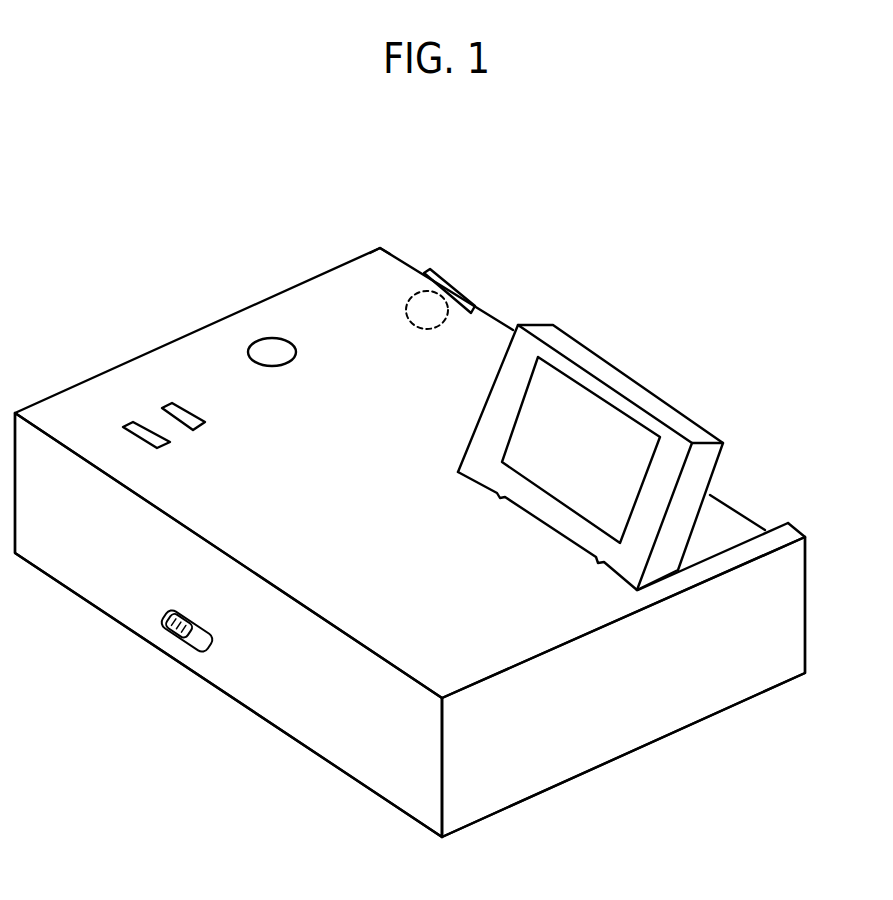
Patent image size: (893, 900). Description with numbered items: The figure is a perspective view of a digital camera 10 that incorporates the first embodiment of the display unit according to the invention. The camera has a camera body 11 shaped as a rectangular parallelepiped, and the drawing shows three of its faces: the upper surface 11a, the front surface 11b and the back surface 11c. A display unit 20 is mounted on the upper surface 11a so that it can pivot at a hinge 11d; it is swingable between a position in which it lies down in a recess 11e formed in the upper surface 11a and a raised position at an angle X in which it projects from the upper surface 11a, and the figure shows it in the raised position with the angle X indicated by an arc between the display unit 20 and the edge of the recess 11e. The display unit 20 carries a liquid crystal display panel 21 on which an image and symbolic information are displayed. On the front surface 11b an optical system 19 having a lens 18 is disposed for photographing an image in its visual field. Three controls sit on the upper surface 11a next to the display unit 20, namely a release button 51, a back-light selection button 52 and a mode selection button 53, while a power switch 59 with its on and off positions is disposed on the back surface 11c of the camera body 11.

The digital camera 10 is at (543, 224).
The camera body 11 is at (187, 329).
The upper surface 11a is at (502, 627).
The front surface 11b is at (403, 262).
The back surface 11c is at (375, 737).
The hinge 11d is at (548, 527).
The recess 11e is at (806, 538).
The lens 18 is at (473, 317).
The optical system 19 is at (446, 288).
The display unit 20 is at (598, 357).
The liquid crystal display panel 21 is at (628, 447).
The release button 51 is at (272, 350).
The back-light selection button 52 is at (180, 418).
The mode selection button 53 is at (143, 432).
The power switch 59 is at (185, 645).
The angle X is at (740, 445).